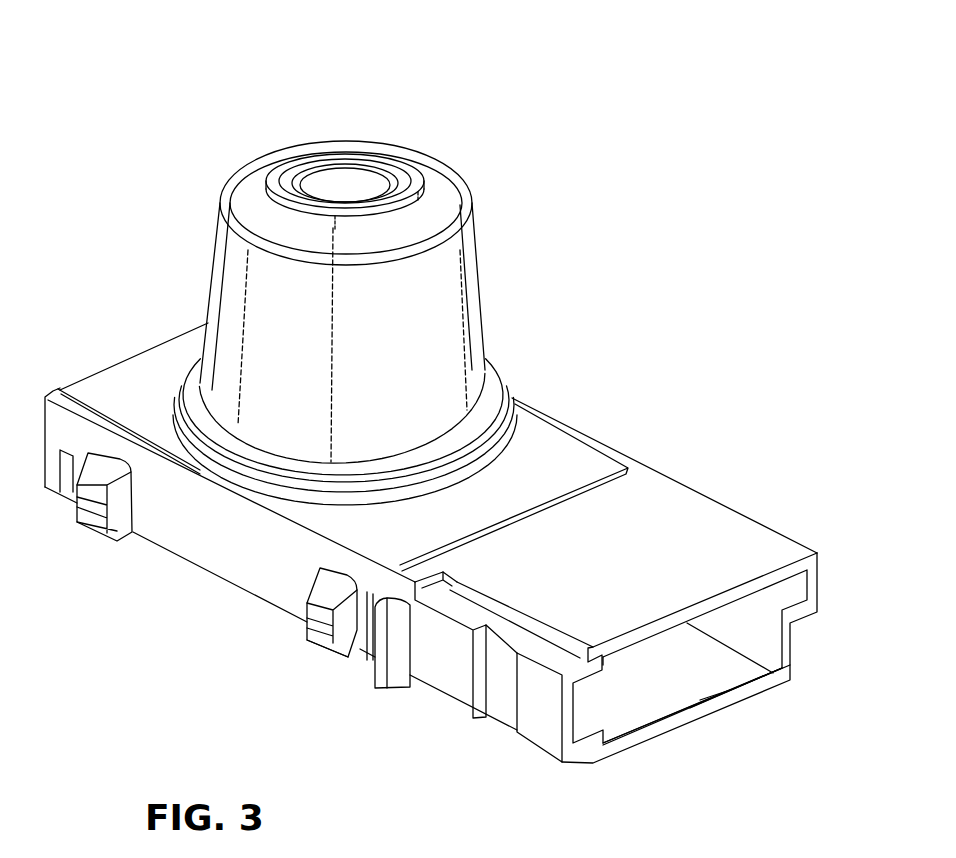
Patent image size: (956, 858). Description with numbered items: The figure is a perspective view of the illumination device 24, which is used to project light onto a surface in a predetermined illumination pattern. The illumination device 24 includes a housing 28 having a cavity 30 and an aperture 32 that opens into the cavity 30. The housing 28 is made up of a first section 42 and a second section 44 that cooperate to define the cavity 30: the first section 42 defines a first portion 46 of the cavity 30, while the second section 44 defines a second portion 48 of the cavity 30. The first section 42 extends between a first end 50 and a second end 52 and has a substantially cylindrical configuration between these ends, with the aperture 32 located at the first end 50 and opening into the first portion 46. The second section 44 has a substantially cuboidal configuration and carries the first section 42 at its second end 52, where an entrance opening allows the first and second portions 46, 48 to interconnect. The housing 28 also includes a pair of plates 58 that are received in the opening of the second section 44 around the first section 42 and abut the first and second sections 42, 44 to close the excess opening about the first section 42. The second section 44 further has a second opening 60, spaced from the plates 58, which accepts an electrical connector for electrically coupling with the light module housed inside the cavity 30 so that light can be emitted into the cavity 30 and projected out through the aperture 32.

The illumination device 24 is at (706, 194).
The housing 28 is at (502, 377).
The cavity 30 is at (300, 189).
The aperture 32 is at (384, 171).
The first section 42 is at (484, 255).
The second section 44 is at (736, 482).
The first portion 46 is at (318, 174).
The second portion 48 is at (616, 722).
The first end 50 is at (383, 133).
The second end 52 is at (195, 476).
The plates 58 is at (114, 385).
The second opening 60 is at (756, 672).